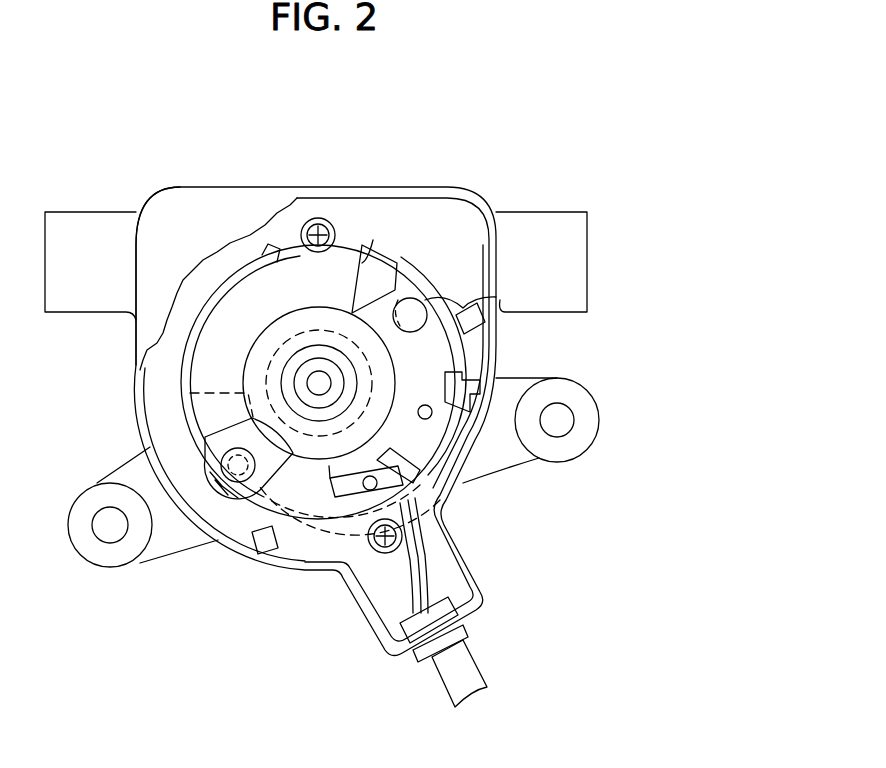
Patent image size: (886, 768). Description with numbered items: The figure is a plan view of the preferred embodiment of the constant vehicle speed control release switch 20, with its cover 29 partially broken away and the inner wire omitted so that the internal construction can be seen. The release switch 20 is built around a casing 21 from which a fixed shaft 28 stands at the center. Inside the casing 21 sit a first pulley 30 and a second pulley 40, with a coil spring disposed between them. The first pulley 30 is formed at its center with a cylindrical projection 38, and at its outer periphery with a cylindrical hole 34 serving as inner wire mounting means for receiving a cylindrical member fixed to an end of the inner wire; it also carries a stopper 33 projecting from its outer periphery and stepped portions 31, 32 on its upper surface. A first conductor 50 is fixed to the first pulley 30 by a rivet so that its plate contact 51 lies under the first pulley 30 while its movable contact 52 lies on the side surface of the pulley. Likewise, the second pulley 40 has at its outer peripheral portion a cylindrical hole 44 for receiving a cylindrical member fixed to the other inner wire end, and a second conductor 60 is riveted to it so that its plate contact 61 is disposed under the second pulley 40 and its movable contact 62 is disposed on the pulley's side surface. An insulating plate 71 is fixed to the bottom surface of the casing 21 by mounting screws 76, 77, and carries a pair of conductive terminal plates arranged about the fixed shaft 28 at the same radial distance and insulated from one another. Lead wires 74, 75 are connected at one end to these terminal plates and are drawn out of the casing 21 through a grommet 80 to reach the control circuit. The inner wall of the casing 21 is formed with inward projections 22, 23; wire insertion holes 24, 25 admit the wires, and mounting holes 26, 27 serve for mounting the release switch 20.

The release switch 20 is at (216, 160).
The casing 21 is at (430, 187).
The inward projection 22 is at (500, 310).
The inward projection 23 is at (262, 533).
The wire insertion hole 24 is at (588, 222).
The wire insertion hole 25 is at (75, 212).
The mounting hole 26 is at (570, 418).
The mounting hole 27 is at (100, 535).
The fixed shaft 28 is at (312, 363).
The cover 29 is at (168, 215).
The first pulley 30 is at (413, 357).
The stepped portion 31 is at (400, 468).
The stepped portion 32 is at (398, 288).
The stopper 33 is at (463, 410).
The cylindrical hole 34 is at (425, 300).
The cylindrical projection 38 is at (290, 363).
The second pulley 40 is at (210, 362).
The cylindrical hole 44 is at (220, 470).
The first conductor 50 is at (440, 396).
The plate contact 51 is at (420, 290).
The movable contact 52 is at (440, 500).
The second conductor 60 is at (350, 493).
The plate contact 61 is at (240, 475).
The movable contact 62 is at (420, 490).
The insulating plate 71 is at (373, 240).
The lead wire 74 is at (373, 637).
The lead wire 75 is at (428, 565).
The mounting screw 76 is at (318, 218).
The mounting screw 77 is at (368, 548).
The grommet 80 is at (463, 627).